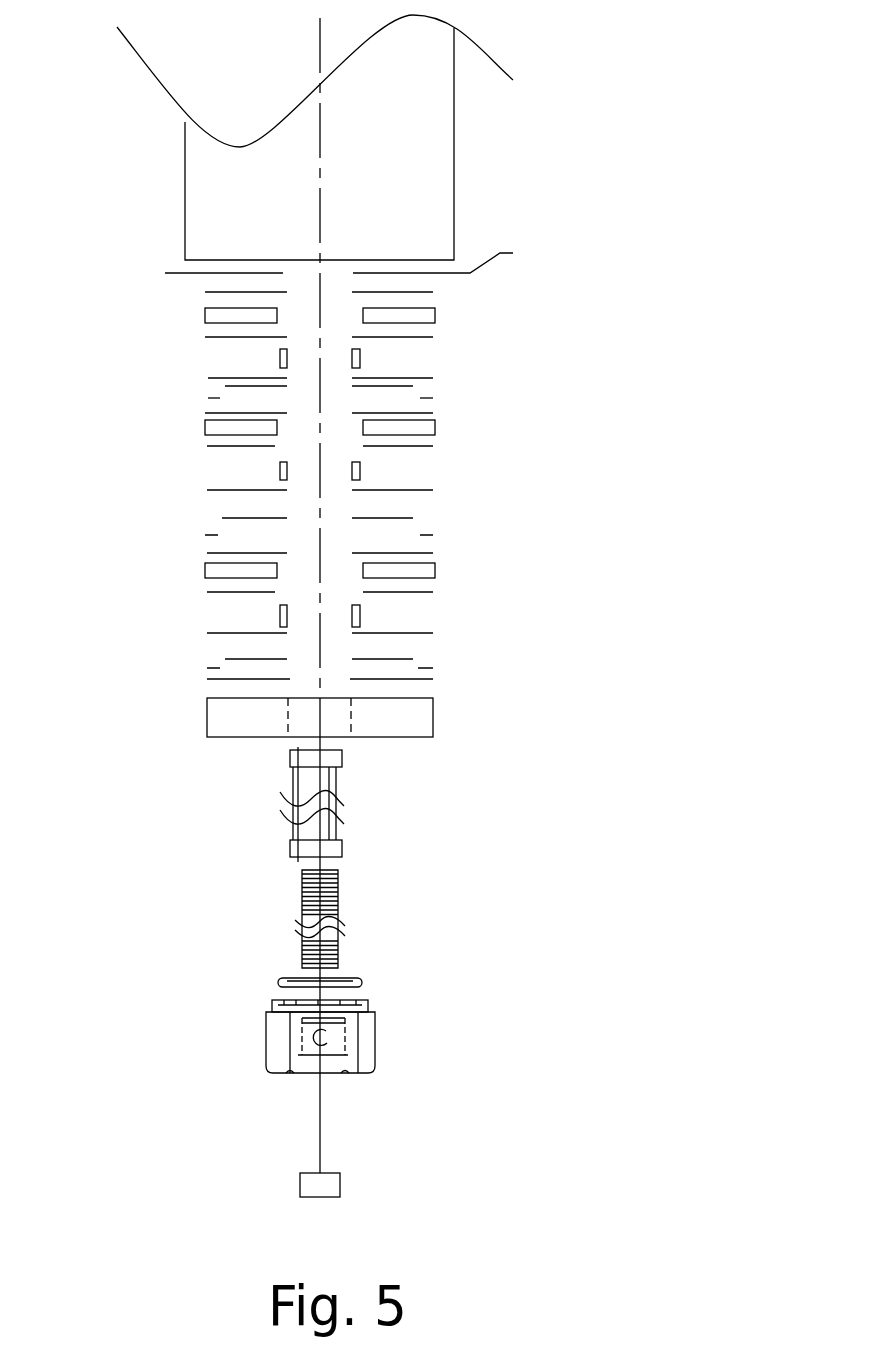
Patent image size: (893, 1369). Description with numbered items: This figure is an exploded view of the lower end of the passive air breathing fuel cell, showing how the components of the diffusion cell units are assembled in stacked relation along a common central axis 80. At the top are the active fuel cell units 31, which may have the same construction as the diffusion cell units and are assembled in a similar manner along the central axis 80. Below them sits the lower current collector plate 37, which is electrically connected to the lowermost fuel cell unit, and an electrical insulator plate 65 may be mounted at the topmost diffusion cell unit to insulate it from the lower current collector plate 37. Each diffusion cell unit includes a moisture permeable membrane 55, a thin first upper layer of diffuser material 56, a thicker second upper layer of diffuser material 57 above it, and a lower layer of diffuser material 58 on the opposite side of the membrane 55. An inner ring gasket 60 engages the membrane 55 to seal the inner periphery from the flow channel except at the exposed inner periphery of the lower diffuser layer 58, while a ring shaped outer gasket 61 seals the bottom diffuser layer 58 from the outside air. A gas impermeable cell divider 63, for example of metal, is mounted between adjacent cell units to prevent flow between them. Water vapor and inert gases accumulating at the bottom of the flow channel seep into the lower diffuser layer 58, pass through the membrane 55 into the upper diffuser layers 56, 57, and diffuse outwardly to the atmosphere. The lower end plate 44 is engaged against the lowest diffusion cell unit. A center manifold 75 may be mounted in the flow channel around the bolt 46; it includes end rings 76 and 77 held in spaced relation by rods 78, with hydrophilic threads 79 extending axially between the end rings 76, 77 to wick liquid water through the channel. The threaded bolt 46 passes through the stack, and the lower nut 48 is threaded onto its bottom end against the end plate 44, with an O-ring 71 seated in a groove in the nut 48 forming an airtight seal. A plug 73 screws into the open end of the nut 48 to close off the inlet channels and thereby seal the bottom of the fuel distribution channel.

The fuel cell units 31 is at (455, 218).
The lower current collector plate 37 is at (165, 273).
The lower end plate 44 is at (433, 717).
The bolt 46 is at (337, 903).
The lower nut 48 is at (263, 1043).
The moisture permeable membrane 55 is at (433, 378).
The first upper layer of diffuser material 56 is at (433, 337).
The second upper layer of diffuser material 57 is at (435, 313).
The lower layer of diffuser material 58 is at (413, 386).
The inner ring gasket 60 is at (280, 360).
The outer gasket 61 is at (208, 398).
The cell divider 63 is at (433, 413).
The electrical insulator plate 65 is at (205, 292).
The O-ring 71 is at (278, 980).
The plug 73 is at (340, 1182).
The center manifold 75 is at (355, 811).
The end ring 76 is at (290, 757).
The end ring 77 is at (342, 842).
The rods 78 is at (298, 783).
The hydrophilic threads 79 is at (342, 773).
The central axis 80 is at (317, 497).